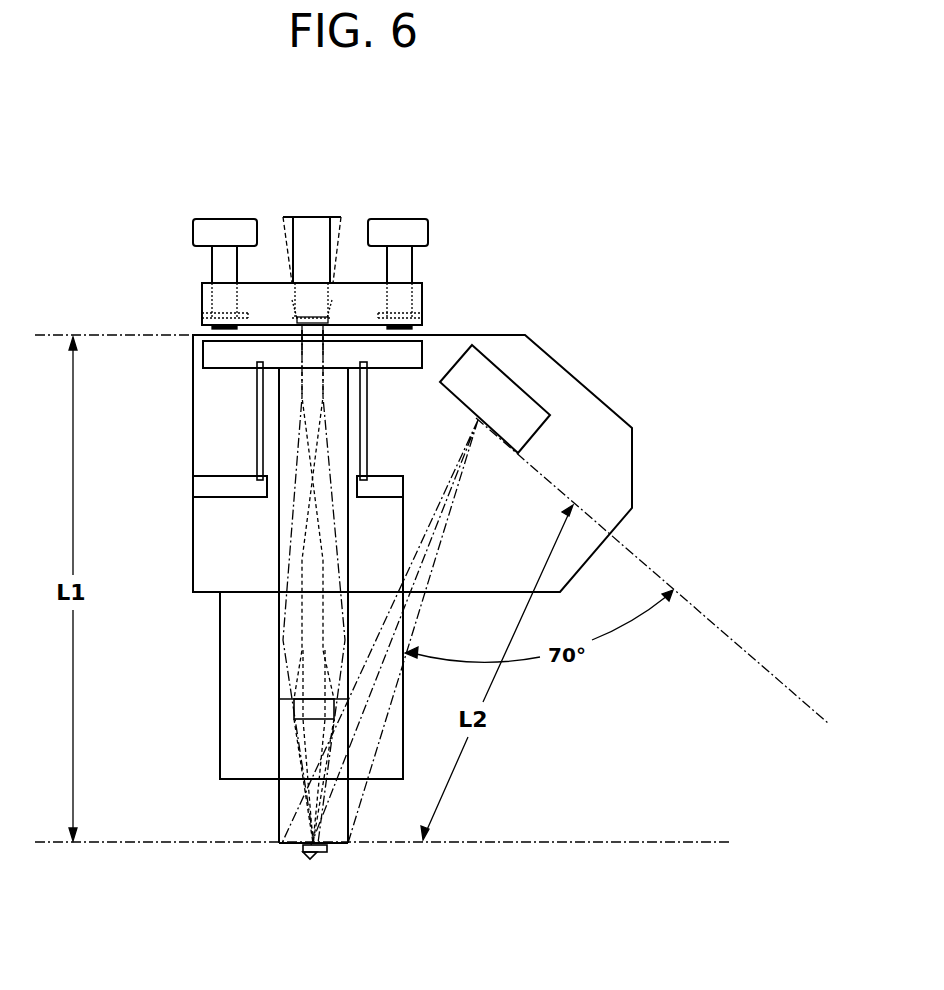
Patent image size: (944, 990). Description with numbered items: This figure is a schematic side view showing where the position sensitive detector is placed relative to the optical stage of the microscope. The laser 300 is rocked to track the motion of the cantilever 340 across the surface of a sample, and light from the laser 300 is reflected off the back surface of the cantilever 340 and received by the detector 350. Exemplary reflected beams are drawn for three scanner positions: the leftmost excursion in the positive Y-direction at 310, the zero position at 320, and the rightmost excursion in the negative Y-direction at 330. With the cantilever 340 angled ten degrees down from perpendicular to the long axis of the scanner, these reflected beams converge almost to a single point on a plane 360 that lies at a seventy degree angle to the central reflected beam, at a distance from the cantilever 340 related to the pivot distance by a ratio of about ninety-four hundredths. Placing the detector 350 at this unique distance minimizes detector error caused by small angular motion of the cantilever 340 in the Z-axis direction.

The laser 300 is at (313, 228).
The leftmost excursion reflected beam 310 is at (272, 838).
The zero position reflected beam 320 is at (320, 851).
The rightmost excursion reflected beam 330 is at (350, 838).
The cantilever 340 is at (306, 855).
The detector 350 is at (513, 398).
The plane 360 is at (717, 612).